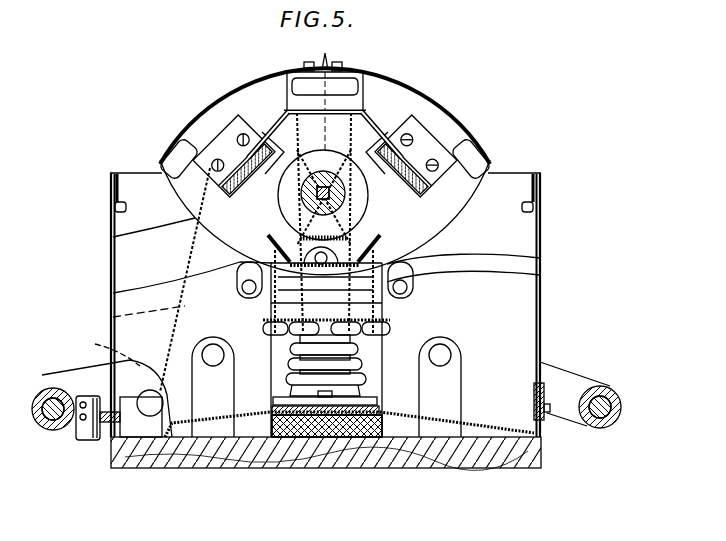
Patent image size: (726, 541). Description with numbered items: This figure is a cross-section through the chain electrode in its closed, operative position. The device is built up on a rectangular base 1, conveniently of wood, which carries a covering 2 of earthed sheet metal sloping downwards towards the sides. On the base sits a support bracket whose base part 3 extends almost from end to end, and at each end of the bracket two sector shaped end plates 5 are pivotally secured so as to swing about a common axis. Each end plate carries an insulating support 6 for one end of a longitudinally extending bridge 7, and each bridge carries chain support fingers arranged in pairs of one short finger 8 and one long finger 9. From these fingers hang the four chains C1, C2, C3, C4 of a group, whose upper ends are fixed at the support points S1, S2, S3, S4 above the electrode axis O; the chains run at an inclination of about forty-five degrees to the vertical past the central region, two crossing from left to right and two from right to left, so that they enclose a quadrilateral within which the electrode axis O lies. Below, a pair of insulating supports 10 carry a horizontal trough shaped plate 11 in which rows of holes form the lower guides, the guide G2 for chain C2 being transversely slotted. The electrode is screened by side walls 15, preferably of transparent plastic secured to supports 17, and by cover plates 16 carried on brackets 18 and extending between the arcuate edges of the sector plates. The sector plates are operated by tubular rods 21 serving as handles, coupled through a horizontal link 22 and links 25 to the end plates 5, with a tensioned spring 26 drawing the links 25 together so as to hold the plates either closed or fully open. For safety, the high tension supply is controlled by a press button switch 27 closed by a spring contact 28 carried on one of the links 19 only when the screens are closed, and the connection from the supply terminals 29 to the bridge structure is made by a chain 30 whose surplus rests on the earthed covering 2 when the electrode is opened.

The rectangular base 1 is at (299, 460).
The covering of sheet metal 2 is at (256, 412).
The base part 3 is at (381, 410).
The sector shaped end plates 5 is at (110, 239).
The insulating support 6 is at (238, 116).
The bridges 7 is at (233, 200).
The short finger 8 is at (288, 110).
The long finger 9 is at (358, 110).
The insulating supports 10 is at (358, 360).
The trough shaped plate 11 is at (377, 246).
The side walls 15 is at (110, 268).
The cover plates 16 is at (211, 105).
The supports 17 is at (556, 438).
The brackets 18 is at (176, 142).
The links 19 is at (108, 372).
The tubular rods 21 is at (49, 392).
The horizontal link 22 is at (540, 276).
The link 25 is at (110, 294).
The tensioned spring 26 is at (318, 240).
The press button switch 27 is at (137, 425).
The spring contact 28 is at (97, 440).
The H. T. supply terminals 29 is at (153, 487).
The chain 30 is at (110, 318).
The chain C1 is at (399, 310).
The chain C2 is at (254, 306).
The chain C3 is at (355, 196).
The chain C4 is at (298, 192).
The guide G2 is at (276, 247).
The electrode axis O is at (338, 199).
The support point S1 is at (304, 123).
The support point S2 is at (345, 123).
The support point S3 is at (382, 124).
The support point S4 is at (268, 125).